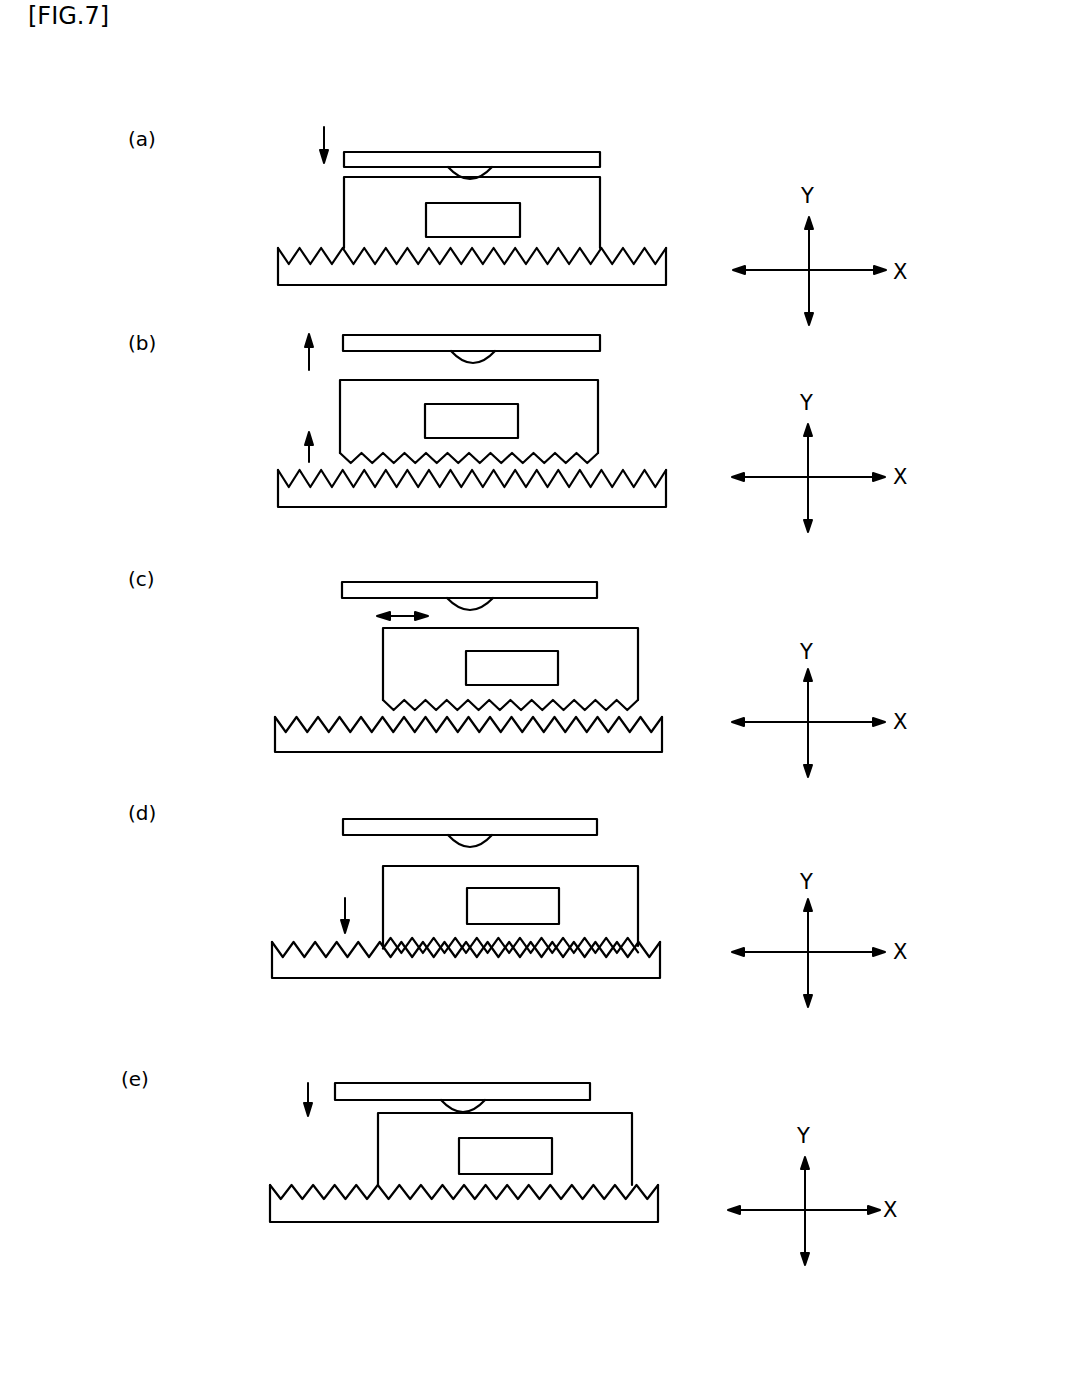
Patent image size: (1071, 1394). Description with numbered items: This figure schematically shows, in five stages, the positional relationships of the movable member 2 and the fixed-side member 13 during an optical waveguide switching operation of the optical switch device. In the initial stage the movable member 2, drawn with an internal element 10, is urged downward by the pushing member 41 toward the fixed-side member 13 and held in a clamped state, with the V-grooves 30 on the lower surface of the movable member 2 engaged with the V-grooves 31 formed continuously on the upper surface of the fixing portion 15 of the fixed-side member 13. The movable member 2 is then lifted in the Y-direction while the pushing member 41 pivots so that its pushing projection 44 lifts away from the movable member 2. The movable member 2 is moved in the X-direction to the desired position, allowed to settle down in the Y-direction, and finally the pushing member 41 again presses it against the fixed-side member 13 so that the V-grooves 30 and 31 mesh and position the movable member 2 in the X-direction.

The movable member 2 is at (322, 208).
The driving element 10 is at (503, 223).
The fixed-side member 13 is at (455, 744).
The fixing portion 15 is at (643, 275).
The V-grooves 30 is at (548, 256).
The V-grooves 31 is at (600, 481).
The pushing member 41 is at (428, 162).
The pushing projection 44 is at (478, 176).